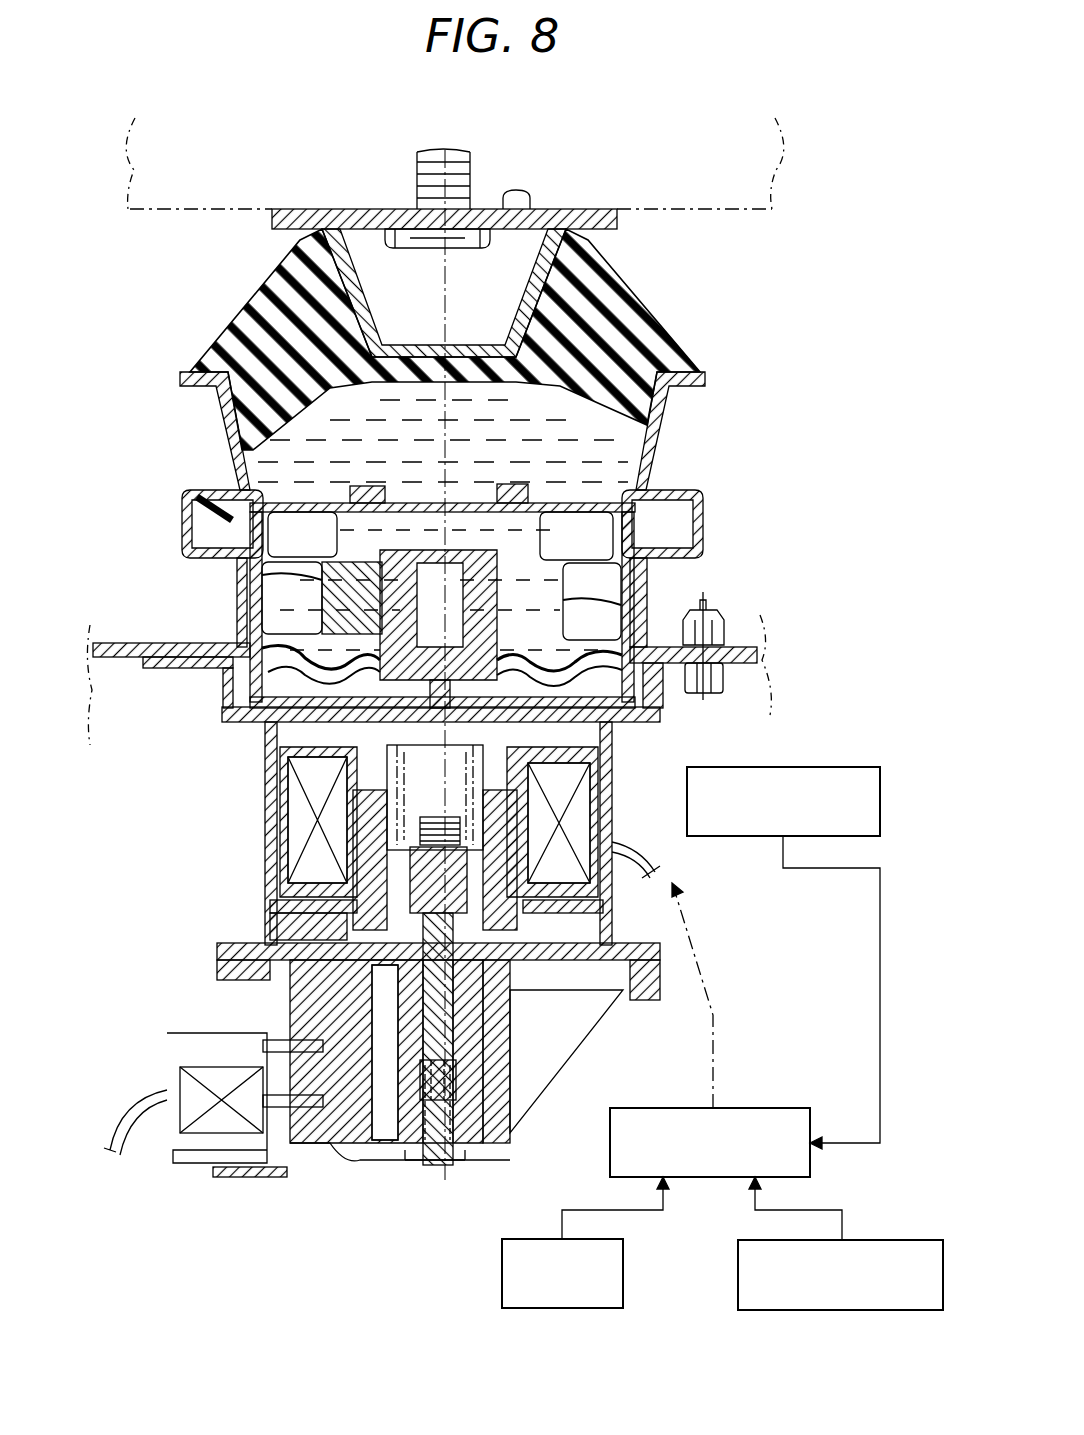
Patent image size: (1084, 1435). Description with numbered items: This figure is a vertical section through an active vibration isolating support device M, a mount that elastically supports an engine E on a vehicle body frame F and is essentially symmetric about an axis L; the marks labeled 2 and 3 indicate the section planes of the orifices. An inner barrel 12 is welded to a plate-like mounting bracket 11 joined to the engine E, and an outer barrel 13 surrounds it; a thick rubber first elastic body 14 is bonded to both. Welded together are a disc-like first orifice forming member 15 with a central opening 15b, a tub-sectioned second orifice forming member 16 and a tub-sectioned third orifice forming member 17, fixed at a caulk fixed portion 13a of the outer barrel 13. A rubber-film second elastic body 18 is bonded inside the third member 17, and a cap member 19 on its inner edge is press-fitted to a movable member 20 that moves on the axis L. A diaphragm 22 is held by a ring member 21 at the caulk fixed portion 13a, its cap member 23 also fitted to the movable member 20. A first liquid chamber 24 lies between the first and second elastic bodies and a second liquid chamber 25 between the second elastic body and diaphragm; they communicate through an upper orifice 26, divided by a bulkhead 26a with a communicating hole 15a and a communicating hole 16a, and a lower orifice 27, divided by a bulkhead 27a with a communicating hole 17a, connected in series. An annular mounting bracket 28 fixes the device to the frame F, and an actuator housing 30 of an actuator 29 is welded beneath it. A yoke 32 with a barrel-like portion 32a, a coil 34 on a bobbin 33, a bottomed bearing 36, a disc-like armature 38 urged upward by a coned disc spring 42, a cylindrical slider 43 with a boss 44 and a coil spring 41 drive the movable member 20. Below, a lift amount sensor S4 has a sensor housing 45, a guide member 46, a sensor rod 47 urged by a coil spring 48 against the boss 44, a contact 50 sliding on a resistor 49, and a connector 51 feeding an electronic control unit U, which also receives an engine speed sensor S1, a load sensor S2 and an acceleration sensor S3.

The mounting bracket 11 is at (598, 209).
The inner barrel 12 is at (362, 300).
The outer barrel 13 is at (222, 412).
The caulk fixed portion 13a is at (192, 500).
The first elastic body 14 is at (258, 318).
The first orifice forming member 15 is at (371, 486).
The communicating hole 15a is at (571, 505).
The opening 15b is at (380, 490).
The second orifice forming member 16 is at (288, 558).
The communicating hole 16a is at (576, 536).
The third orifice forming member 17 is at (285, 630).
The communicating hole 17a is at (592, 601).
The second elastic body 18 is at (334, 630).
The cap member 19 is at (446, 556).
The movable member 20 is at (395, 678).
The ring member 21 is at (196, 516).
The diaphragm 22 is at (345, 666).
The cap member 23 is at (382, 628).
The first liquid chamber 24 is at (474, 438).
The second liquid chamber 25 is at (490, 626).
The upper orifice 26 is at (288, 526).
The bulkhead 26a is at (510, 500).
The lower orifice 27 is at (283, 576).
The bulkhead 27a is at (598, 608).
The mounting bracket 28 is at (168, 645).
The actuator 29 is at (232, 807).
The actuator housing 30 is at (267, 778).
The yoke 32 is at (557, 918).
The barrel-like portion 32a is at (524, 784).
The bobbin 33 is at (290, 858).
The coil 34 is at (290, 830).
The bearing 36 is at (460, 712).
The armature 38 is at (540, 716).
The coil spring 41 is at (486, 713).
The coned disc spring 42 is at (300, 733).
The slider 43 is at (498, 963).
The boss 44 is at (559, 824).
The sensor housing 45 is at (290, 1017).
The guide member 46 is at (270, 940).
The sensor rod 47 is at (447, 1012).
The coil spring 48 is at (462, 1142).
The resistor 49 is at (392, 1150).
The contact 50 is at (413, 1057).
The connector 51 is at (207, 1067).
The section line II-II 2 is at (128, 512).
The section line III-III 3 is at (128, 567).
The axis L is at (448, 262).
The engine E is at (690, 212).
The active vibration isolating support device M is at (694, 442).
The vehicle body frame F is at (700, 636).
The electronic control unit U is at (775, 1108).
The engine speed sensor S1 is at (847, 767).
The load sensor S2 is at (502, 1272).
The acceleration sensor S3 is at (900, 1240).
The lift amount sensor S4 is at (358, 1152).